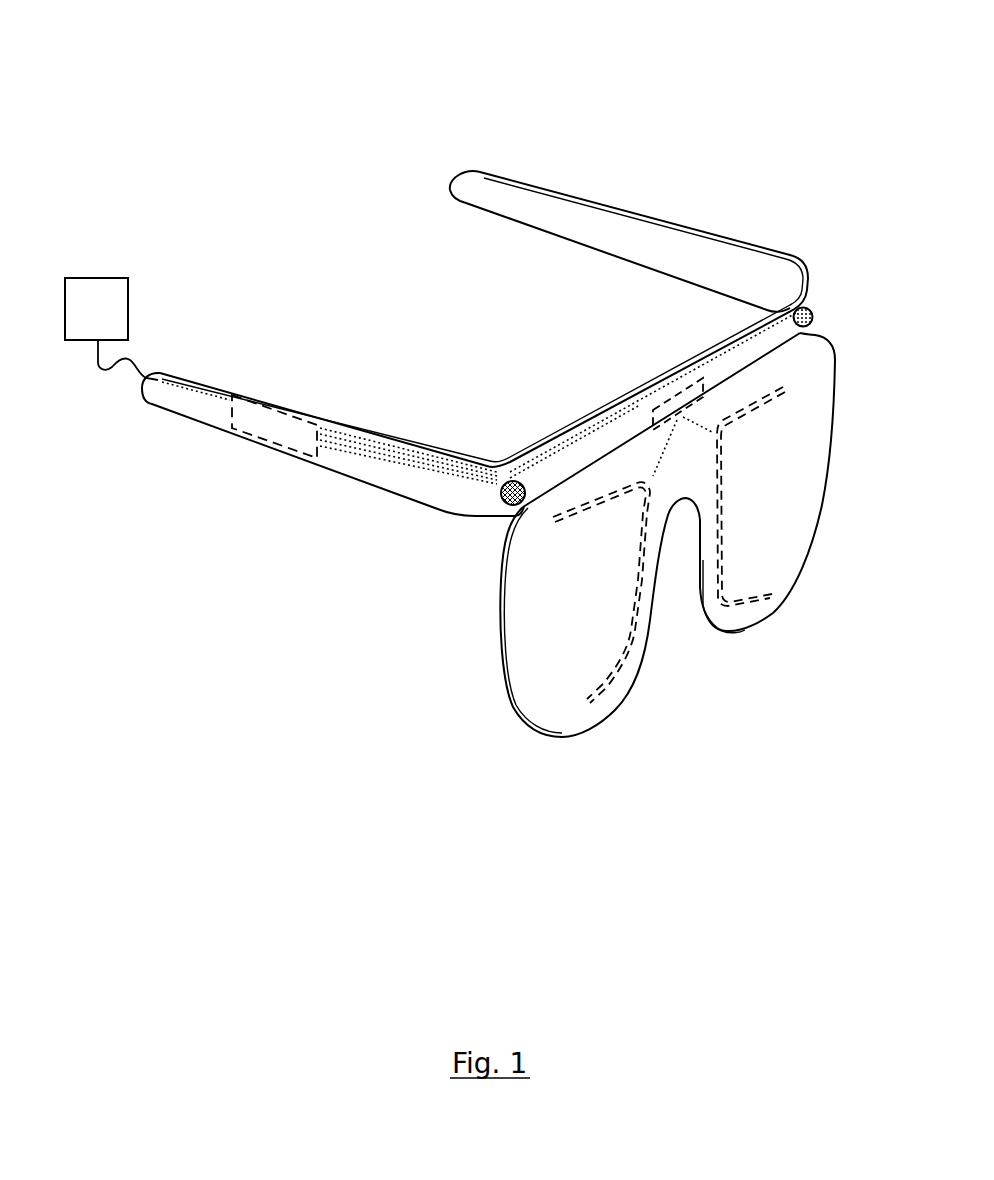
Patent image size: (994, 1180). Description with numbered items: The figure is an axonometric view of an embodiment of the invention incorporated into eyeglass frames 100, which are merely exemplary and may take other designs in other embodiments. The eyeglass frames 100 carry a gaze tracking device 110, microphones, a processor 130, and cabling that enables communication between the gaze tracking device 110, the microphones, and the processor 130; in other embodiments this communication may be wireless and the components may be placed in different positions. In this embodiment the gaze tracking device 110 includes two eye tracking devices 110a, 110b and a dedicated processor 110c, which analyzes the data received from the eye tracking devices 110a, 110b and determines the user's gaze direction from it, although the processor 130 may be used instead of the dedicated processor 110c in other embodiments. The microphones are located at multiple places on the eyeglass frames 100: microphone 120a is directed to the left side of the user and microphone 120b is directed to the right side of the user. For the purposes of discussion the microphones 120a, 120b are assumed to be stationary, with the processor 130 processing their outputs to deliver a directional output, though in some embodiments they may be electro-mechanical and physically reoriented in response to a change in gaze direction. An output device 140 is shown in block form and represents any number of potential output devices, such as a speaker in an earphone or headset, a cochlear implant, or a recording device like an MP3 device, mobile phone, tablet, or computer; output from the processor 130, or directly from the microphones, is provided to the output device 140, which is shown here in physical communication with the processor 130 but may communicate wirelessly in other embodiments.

The eyeglass frames 100 is at (326, 122).
The gaze tracking device 110 is at (550, 525).
The eye tracking device 110a is at (730, 603).
The eye tracking device 110b is at (607, 690).
The dedicated processor 110c is at (672, 394).
The microphone 120a is at (806, 310).
The microphone 120b is at (503, 500).
The processor 130 is at (281, 448).
The output device 140 is at (128, 292).